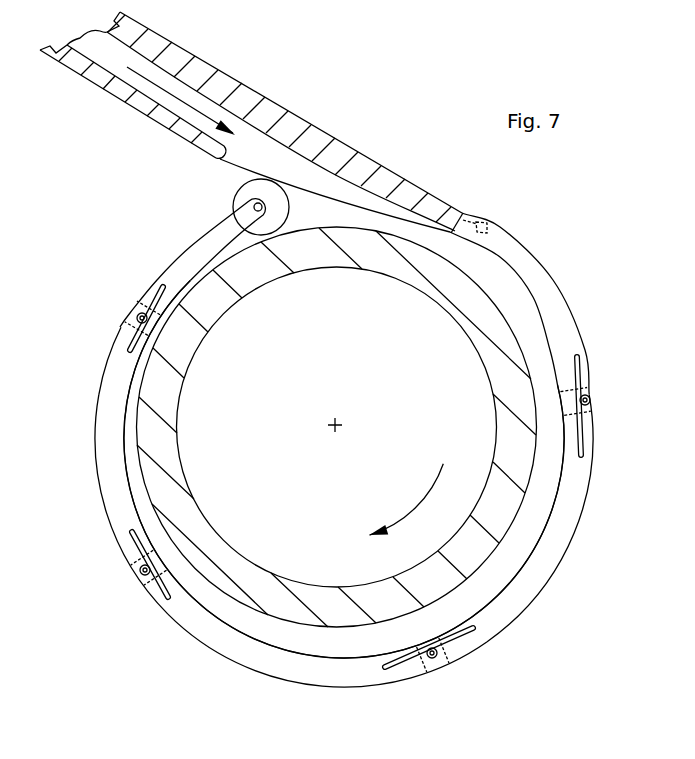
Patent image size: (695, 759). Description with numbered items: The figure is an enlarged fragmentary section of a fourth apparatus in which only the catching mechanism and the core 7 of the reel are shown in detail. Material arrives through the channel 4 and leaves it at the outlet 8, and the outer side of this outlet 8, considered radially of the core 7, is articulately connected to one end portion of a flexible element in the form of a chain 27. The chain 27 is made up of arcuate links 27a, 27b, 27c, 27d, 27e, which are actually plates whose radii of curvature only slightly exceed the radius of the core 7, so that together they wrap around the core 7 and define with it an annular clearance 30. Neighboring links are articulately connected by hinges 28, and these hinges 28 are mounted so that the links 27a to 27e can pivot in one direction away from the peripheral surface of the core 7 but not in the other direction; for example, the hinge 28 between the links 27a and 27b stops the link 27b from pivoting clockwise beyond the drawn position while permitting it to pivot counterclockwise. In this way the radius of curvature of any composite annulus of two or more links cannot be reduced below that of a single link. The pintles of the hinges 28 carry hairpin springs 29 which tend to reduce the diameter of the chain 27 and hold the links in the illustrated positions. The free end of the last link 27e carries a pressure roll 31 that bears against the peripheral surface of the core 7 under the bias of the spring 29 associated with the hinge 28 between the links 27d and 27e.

The channel 4 is at (256, 88).
The core 7 is at (265, 463).
The outlet 8 is at (293, 168).
The chain 27 is at (340, 462).
The arcuate link 27a is at (547, 287).
The arcuate link 27b is at (518, 592).
The arcuate link 27c is at (287, 668).
The arcuate link 27d is at (103, 433).
The last link 27e is at (180, 262).
The hinge 28 is at (133, 307).
The hairpin spring 29 is at (137, 340).
The annular clearance 30 is at (548, 477).
The pressure roll 31 is at (243, 195).